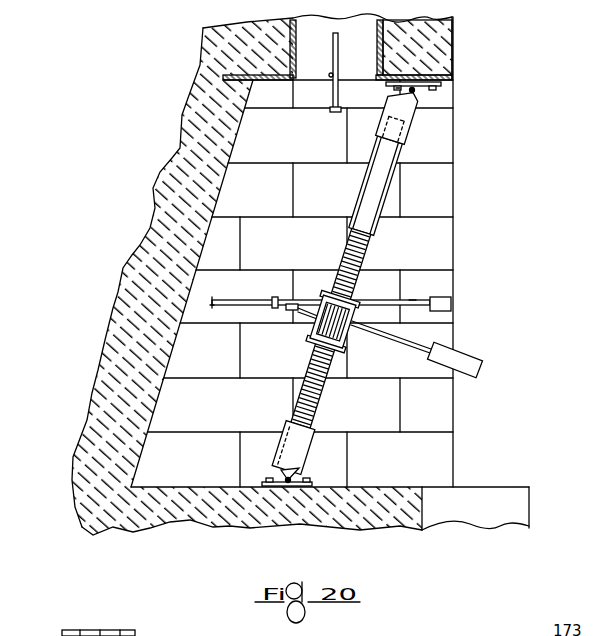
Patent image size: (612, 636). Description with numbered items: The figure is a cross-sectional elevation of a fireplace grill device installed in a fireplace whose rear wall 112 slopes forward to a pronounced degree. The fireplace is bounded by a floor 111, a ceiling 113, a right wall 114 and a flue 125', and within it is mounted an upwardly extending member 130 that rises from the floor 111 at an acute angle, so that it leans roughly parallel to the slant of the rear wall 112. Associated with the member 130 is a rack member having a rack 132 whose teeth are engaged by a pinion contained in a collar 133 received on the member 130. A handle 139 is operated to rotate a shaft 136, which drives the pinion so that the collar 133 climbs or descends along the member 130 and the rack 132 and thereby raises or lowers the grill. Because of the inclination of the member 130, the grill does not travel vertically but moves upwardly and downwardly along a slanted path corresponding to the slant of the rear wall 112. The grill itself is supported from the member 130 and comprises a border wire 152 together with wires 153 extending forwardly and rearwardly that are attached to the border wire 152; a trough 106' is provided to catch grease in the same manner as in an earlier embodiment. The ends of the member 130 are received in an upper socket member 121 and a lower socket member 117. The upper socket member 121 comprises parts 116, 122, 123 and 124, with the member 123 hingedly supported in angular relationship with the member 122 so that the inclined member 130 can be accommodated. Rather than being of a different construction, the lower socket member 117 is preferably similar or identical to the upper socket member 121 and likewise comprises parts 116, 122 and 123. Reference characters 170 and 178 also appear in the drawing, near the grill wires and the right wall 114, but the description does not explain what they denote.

The trough 106' is at (235, 316).
The floor 111 is at (403, 485).
The rear wall 112 is at (226, 185).
The ceiling 113 is at (446, 70).
The right wall 114 is at (455, 193).
The part of socket member 116 is at (400, 87).
The lower socket member 117 is at (328, 456).
The upper socket member 121 is at (390, 129).
The part of socket member 122 is at (442, 85).
The hinged member 123 is at (415, 135).
The part of socket member 124 is at (414, 91).
The flue 125' is at (322, 72).
The upwardly extending member 130 is at (368, 196).
The rack 132 is at (350, 256).
The collar 133 is at (321, 330).
The shaft 136 is at (400, 340).
The handle 139 is at (494, 349).
The border wire 152 is at (246, 300).
The grill wires 153 is at (244, 296).
The cable 170 is at (410, 300).
The anchor 178 is at (451, 299).